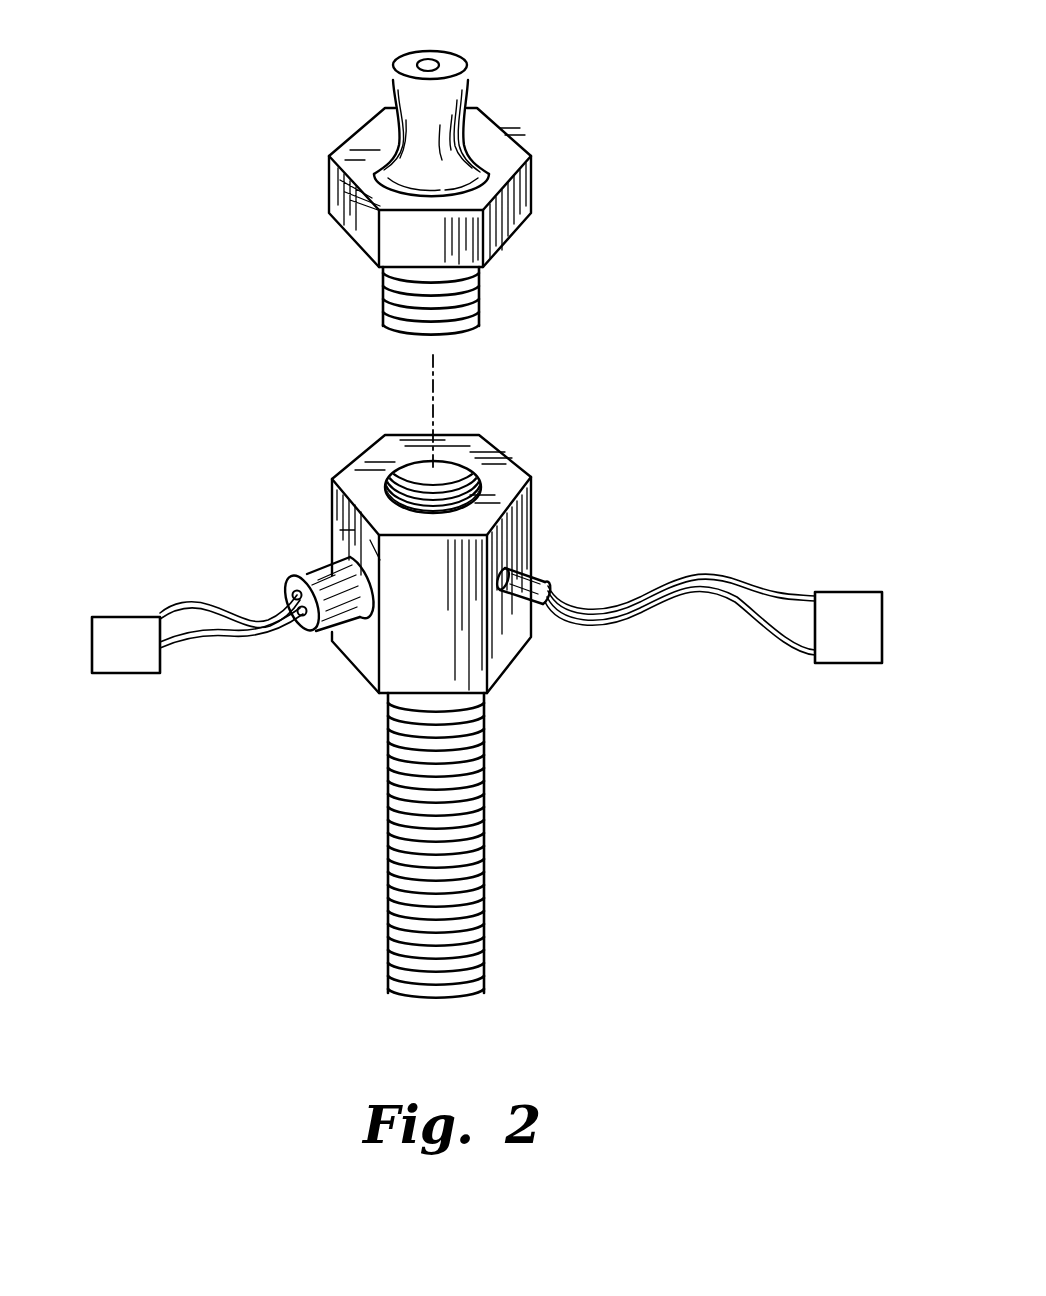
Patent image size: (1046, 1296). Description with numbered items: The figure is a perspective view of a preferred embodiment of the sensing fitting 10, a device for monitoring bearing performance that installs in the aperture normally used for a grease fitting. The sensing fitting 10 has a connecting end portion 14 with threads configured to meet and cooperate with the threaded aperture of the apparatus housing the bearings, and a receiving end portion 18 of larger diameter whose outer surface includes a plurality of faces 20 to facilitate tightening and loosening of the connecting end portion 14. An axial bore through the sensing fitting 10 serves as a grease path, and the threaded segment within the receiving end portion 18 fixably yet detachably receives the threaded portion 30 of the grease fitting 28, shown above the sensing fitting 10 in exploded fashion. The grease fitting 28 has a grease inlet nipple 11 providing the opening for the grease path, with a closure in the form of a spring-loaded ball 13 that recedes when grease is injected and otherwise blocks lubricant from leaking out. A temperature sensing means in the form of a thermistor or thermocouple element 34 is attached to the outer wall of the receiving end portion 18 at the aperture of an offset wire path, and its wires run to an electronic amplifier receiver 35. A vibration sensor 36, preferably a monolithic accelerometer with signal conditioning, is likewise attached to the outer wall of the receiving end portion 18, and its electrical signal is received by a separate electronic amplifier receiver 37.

The sensing fitting 10 is at (540, 420).
The grease inlet nipple 11 is at (478, 172).
The spring-loaded ball 13 is at (428, 60).
The connecting end portion 14 is at (487, 843).
The receiving end portion 18 is at (533, 514).
The faces 20 is at (360, 643).
The grease fitting 28 is at (508, 160).
The threaded portion 30 is at (481, 300).
The thermistor or thermocouple element 34 is at (543, 582).
The electronic amplifier receiver 35 is at (850, 592).
The vibration sensor 36 is at (288, 578).
The electronic amplifier receiver 37 is at (118, 675).